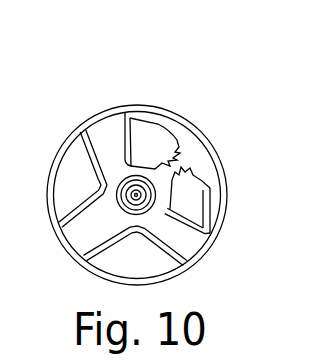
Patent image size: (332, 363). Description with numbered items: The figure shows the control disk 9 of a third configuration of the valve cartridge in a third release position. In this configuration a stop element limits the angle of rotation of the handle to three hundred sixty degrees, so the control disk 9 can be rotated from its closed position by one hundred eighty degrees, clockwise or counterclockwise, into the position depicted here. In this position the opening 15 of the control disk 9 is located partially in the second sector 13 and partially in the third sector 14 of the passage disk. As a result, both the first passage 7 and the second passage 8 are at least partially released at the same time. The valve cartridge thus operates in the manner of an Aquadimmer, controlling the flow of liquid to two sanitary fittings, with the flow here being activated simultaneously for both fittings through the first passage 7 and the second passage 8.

The first passage 7 is at (193, 193).
The second passage 8 is at (144, 128).
The control disk 9 is at (84, 112).
The second sector 13 is at (221, 211).
The third sector 14 is at (148, 135).
The opening 15 is at (183, 160).